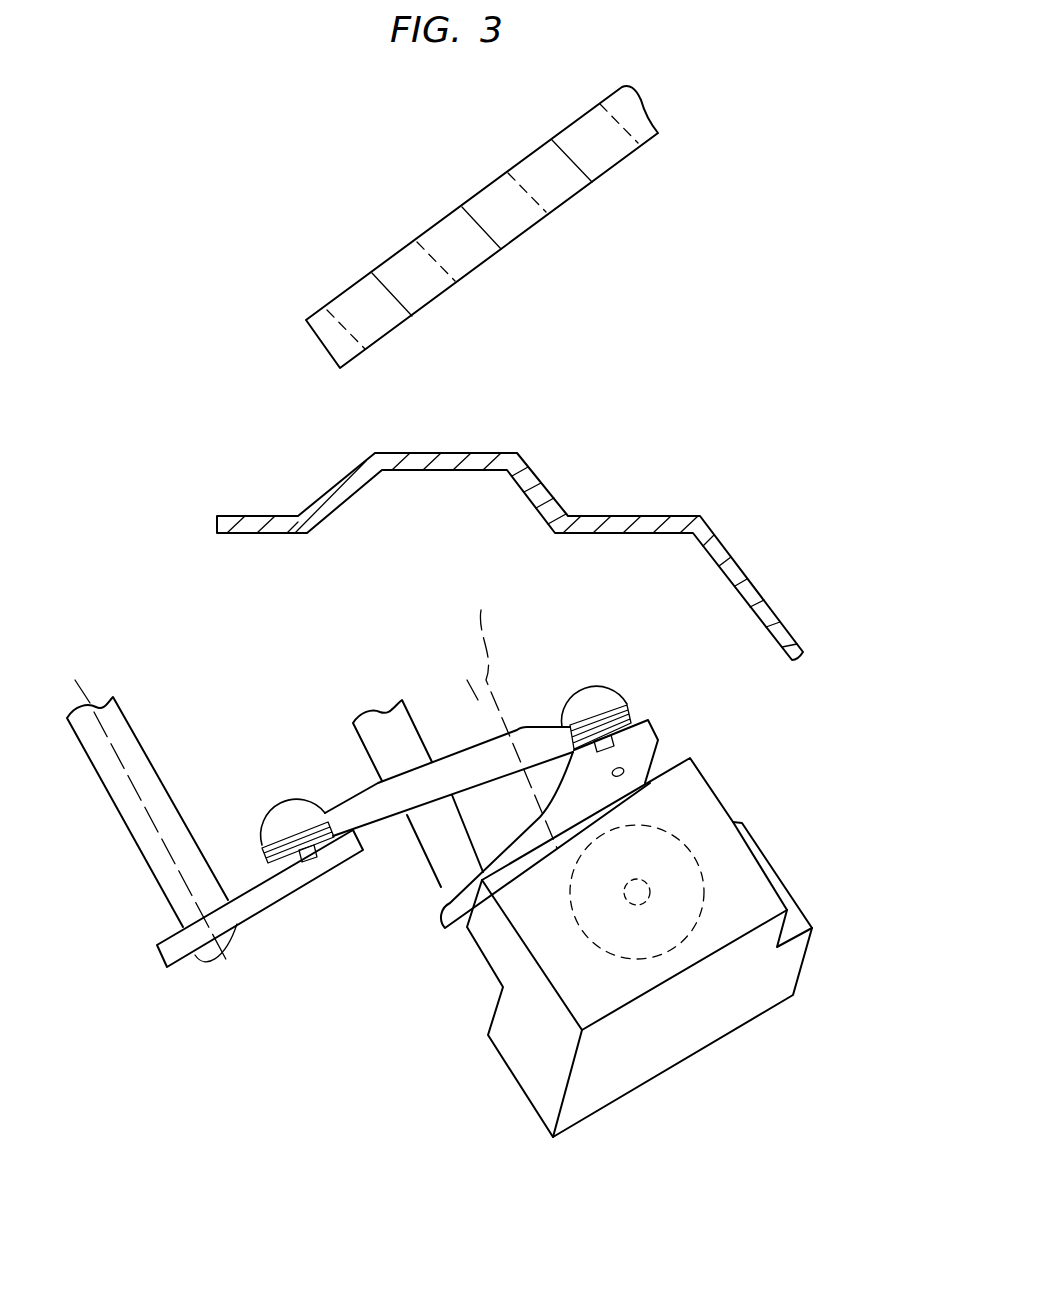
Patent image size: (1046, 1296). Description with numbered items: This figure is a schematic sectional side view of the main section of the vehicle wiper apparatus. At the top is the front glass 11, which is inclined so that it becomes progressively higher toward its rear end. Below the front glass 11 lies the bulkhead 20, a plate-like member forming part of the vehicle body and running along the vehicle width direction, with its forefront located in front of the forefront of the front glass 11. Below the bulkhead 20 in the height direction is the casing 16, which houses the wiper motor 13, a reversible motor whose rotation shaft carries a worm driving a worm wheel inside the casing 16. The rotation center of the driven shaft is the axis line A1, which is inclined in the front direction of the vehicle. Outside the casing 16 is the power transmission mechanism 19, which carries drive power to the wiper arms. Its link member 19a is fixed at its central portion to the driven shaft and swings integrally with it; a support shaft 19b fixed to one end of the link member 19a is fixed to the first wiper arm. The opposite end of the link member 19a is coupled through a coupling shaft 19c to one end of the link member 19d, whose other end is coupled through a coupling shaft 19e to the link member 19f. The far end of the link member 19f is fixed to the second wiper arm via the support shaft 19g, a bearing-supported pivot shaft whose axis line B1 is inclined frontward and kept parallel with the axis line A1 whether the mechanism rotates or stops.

The front glass 11 is at (386, 262).
The bulkhead 20 is at (473, 453).
The casing 16 is at (680, 1061).
The wiper motor 13 is at (698, 852).
The power transmission mechanism 19 is at (375, 878).
The link member 19a is at (449, 918).
The support shaft 19b is at (420, 737).
The coupling shaft 19c is at (625, 772).
The link member 19d is at (535, 727).
The coupling shaft 19e is at (258, 867).
The link member 19f is at (263, 900).
The support shaft 19g is at (150, 845).
The axis line A1 is at (512, 715).
The axis line B1 is at (92, 670).